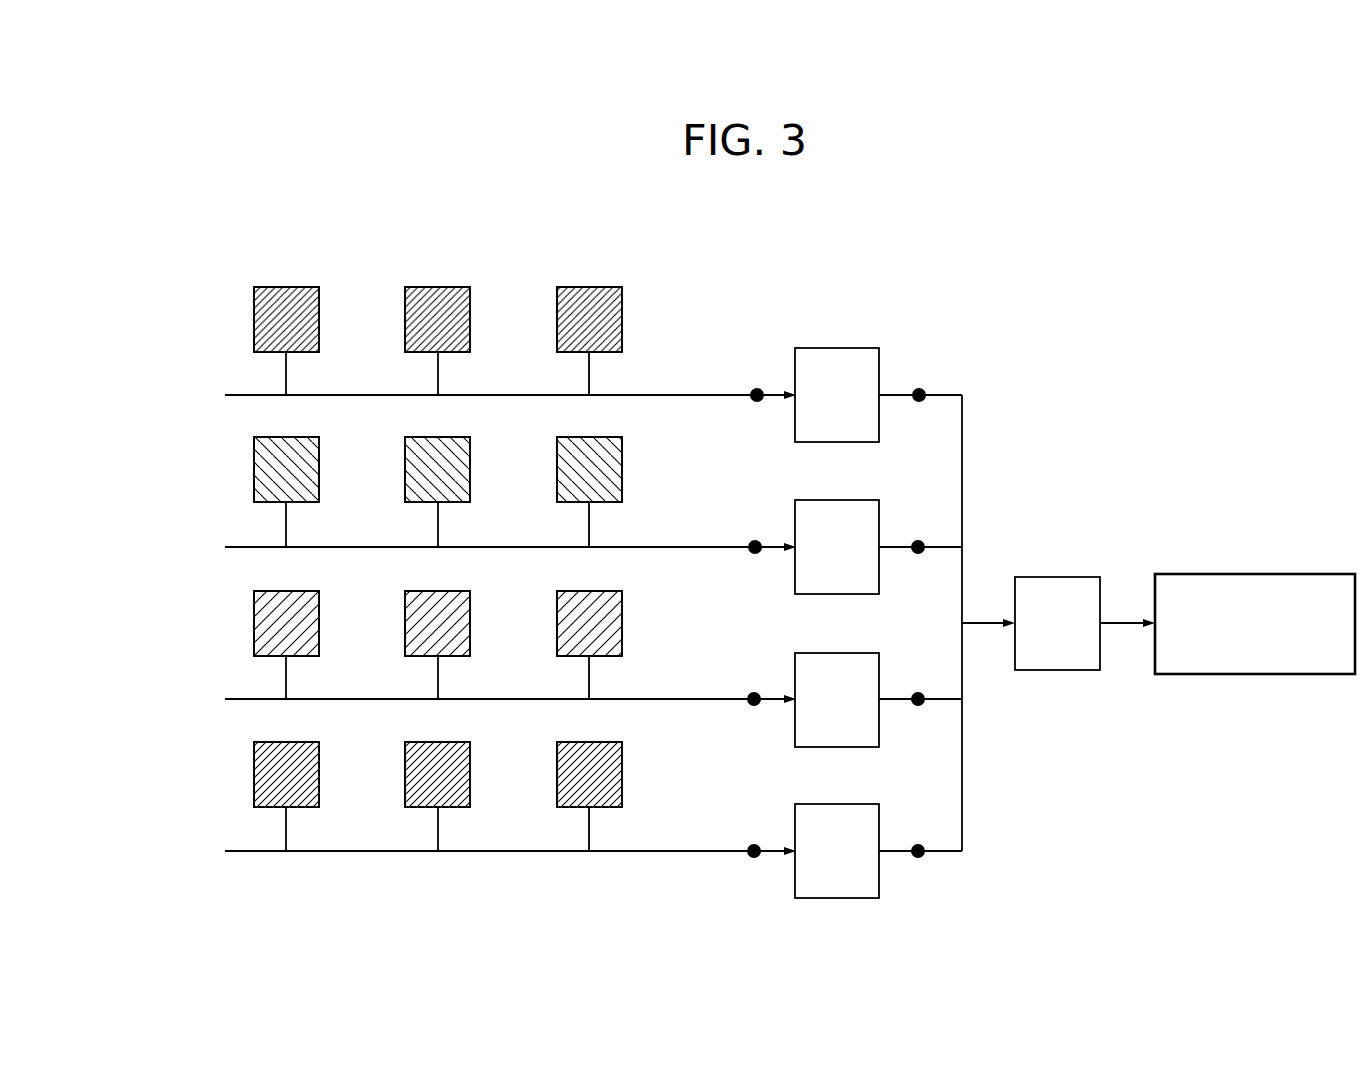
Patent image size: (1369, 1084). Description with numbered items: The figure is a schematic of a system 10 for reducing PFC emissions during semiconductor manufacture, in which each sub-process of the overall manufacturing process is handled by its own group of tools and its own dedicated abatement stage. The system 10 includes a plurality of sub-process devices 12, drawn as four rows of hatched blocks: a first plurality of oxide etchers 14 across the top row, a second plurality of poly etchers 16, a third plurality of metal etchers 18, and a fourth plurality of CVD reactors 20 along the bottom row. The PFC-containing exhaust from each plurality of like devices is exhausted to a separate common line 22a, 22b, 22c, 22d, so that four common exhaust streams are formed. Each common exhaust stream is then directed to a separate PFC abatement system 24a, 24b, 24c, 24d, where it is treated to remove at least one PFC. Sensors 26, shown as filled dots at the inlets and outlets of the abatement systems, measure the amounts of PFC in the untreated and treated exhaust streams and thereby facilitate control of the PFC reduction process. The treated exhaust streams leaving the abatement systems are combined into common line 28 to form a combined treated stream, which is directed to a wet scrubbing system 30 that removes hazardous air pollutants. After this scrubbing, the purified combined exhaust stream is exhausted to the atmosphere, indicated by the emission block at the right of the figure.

The system for reducing PFC emissions 10 is at (212, 877).
The sub-process devices 12 is at (216, 319).
The oxide etchers 14 is at (585, 287).
The poly etchers 16 is at (557, 470).
The metal etchers 18 is at (557, 622).
The CVD reactors 20 is at (557, 774).
The common line 22a is at (700, 395).
The common line 22b is at (700, 547).
The common line 22c is at (700, 699).
The common line 22d is at (700, 851).
The PFC abatement system 24a is at (827, 348).
The PFC abatement system 24b is at (827, 500).
The PFC abatement system 24c is at (827, 653).
The PFC abatement system 24d is at (827, 804).
The sensors 26 is at (757, 388).
The common line 28 is at (989, 621).
The wet scrubbing system 30 is at (1050, 577).